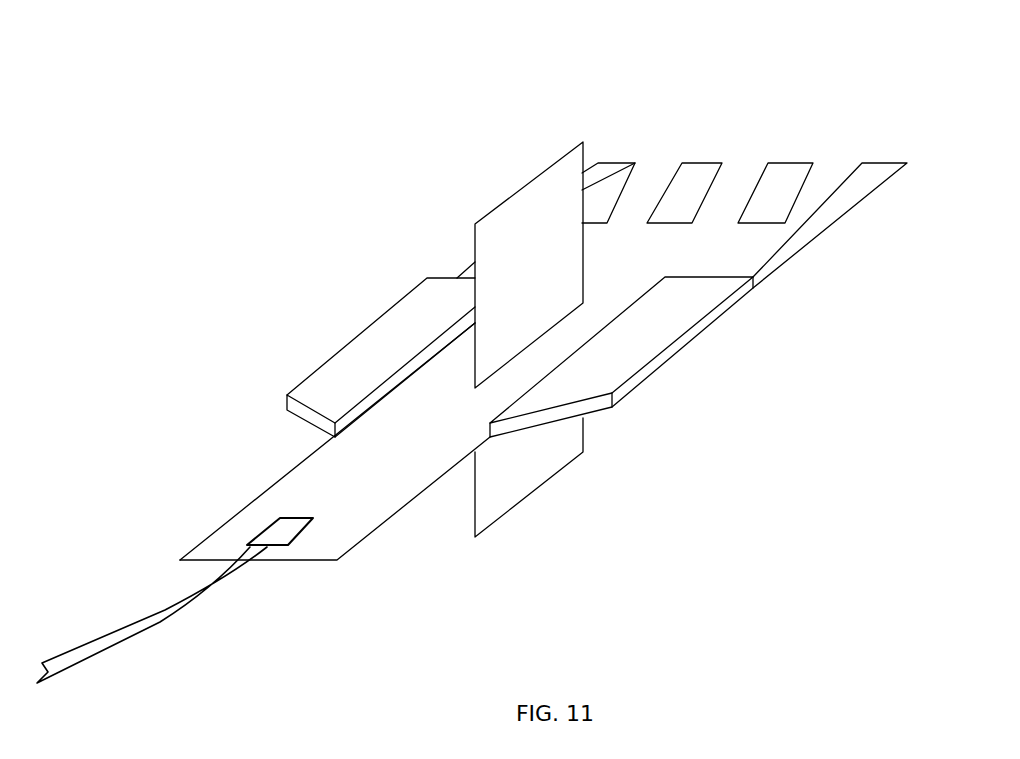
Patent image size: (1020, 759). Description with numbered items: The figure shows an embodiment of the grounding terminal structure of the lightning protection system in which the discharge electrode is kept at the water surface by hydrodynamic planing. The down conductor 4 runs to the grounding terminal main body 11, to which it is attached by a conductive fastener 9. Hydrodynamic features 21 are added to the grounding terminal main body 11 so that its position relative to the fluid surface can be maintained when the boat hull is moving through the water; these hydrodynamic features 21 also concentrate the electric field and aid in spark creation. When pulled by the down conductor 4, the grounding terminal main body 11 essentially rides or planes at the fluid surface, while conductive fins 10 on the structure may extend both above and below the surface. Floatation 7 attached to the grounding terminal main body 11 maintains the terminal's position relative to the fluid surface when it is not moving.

The down conductor 4 is at (73, 622).
The floatation 7 is at (390, 332).
The conductive fastener 9 is at (265, 527).
The conductive fins 10 is at (482, 193).
The grounding terminal main body 11 is at (412, 528).
The hydrodynamic features 21 is at (613, 147).